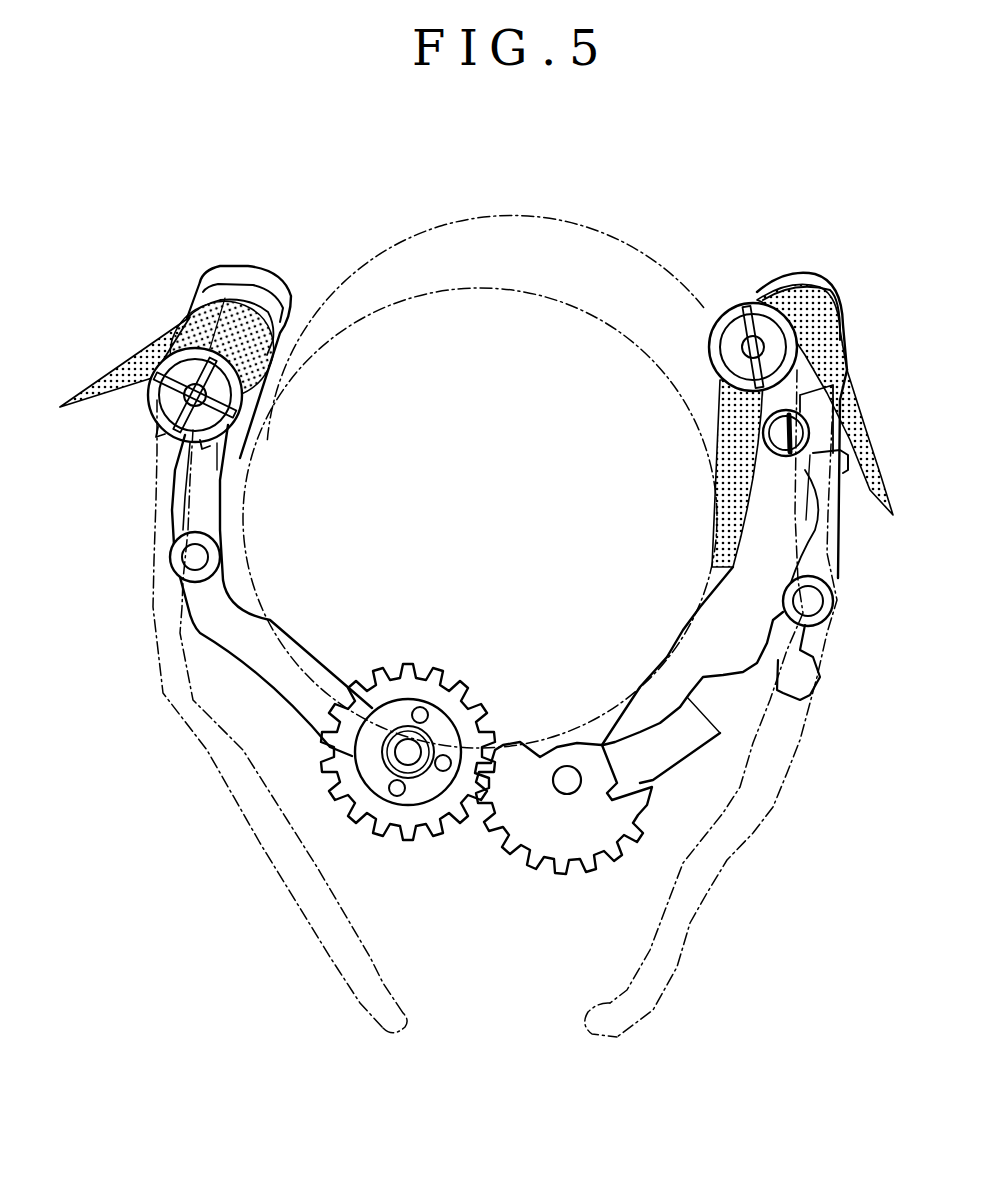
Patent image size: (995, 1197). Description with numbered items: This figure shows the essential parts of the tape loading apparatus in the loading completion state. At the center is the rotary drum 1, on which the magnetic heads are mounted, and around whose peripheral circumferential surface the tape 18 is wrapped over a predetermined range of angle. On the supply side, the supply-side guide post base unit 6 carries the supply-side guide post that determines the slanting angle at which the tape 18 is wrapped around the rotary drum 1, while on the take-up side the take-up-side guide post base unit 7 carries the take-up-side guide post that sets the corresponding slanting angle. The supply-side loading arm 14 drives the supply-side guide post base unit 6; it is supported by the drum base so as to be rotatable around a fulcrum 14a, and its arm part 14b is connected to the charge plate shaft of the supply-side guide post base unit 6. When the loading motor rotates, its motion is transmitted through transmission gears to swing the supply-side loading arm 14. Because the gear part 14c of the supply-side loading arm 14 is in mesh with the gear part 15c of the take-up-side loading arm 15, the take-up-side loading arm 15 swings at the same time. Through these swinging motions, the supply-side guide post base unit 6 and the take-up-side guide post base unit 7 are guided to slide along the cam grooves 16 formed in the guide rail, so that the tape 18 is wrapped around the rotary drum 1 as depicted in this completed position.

The rotary drum 1 is at (432, 325).
The supply-side guide post base unit 6 is at (262, 290).
The take-up-side guide post base unit 7 is at (817, 280).
The supply-side loading arm 14 is at (227, 638).
The fulcrum 14a is at (410, 757).
The arm part 14b is at (200, 503).
The gear part 14c is at (373, 830).
The take-up-side loading arm 15 is at (690, 743).
The gear part 15c is at (618, 860).
The cam grooves 16 is at (392, 983).
The tape 18 is at (718, 440).